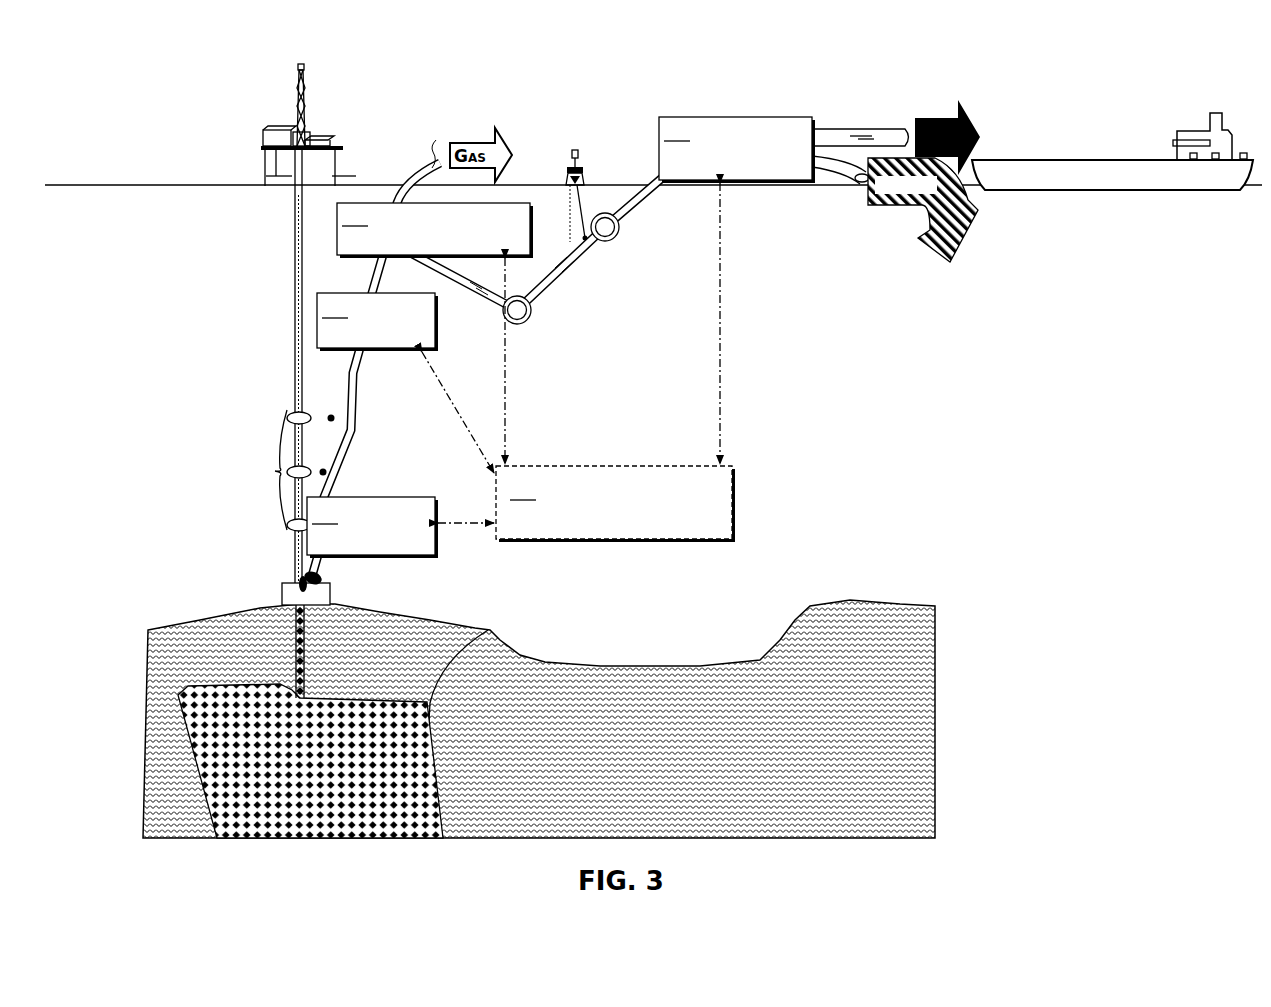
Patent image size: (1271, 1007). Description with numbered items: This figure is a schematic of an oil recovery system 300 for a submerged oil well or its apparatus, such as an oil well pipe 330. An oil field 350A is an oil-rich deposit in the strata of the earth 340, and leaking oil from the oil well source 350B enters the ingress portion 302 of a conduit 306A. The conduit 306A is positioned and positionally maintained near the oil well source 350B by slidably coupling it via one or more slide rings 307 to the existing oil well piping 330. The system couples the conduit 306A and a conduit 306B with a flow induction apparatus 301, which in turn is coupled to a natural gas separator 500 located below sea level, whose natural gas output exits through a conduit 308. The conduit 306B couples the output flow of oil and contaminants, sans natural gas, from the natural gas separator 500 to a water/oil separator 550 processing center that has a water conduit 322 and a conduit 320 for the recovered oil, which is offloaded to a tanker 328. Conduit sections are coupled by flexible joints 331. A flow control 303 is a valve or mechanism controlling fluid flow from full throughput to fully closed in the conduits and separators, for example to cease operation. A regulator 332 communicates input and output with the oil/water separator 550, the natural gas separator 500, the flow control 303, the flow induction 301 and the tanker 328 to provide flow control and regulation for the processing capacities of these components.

The oil recovery system 300 is at (1080, 59).
The flow induction apparatus 301 is at (372, 527).
The ingress portion of conduit 302 is at (330, 575).
The flow control 303 is at (377, 322).
The conduit 306A is at (376, 282).
The conduit 306B is at (483, 297).
The slide rings 307 is at (274, 470).
The conduit 308 is at (422, 163).
The conduit 320 is at (883, 128).
The water conduit 322 is at (843, 172).
The tanker 328 is at (1106, 181).
The oil well pipe 330 is at (295, 318).
The flexible joints 331 is at (620, 215).
The regulator 332 is at (578, 362).
The strata of the earth 340 is at (833, 620).
The oil field 350A is at (488, 630).
The oil well source 350B is at (300, 583).
The natural gas separator 500 is at (435, 230).
The water/oil separator 550 is at (737, 150).